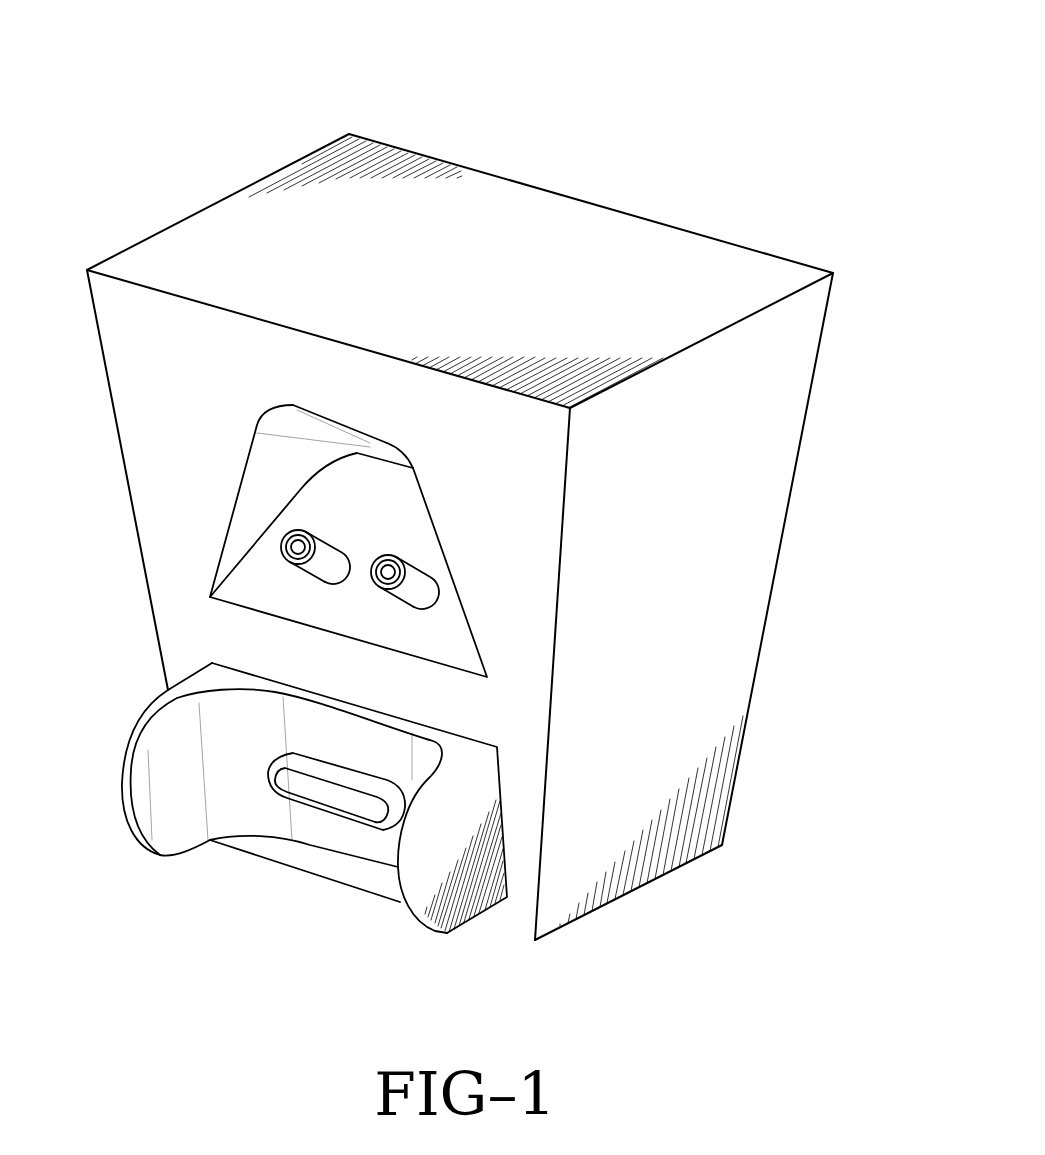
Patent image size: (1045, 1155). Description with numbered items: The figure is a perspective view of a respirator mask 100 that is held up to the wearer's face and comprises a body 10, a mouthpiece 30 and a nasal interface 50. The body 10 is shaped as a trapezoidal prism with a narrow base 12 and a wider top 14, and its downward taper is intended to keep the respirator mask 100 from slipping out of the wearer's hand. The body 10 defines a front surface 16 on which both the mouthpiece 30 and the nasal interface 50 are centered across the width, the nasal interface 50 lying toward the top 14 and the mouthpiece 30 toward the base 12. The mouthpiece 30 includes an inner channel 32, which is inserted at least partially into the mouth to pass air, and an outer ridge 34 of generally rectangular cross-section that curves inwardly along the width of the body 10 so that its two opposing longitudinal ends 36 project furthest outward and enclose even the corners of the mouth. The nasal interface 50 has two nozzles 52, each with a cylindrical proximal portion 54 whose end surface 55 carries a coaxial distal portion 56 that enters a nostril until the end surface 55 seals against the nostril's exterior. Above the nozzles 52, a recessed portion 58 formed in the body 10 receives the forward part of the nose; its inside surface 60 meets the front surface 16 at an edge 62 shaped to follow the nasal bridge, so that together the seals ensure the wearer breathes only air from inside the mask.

The respirator mask 100 is at (160, 120).
The body 10 is at (158, 537).
The base 12 is at (742, 838).
The top 14 is at (840, 297).
The front surface 16 is at (120, 347).
The mouthpiece 30 is at (507, 913).
The inner channel 32 is at (337, 815).
The outer ridge 34 is at (443, 730).
The longitudinal ends 36 is at (122, 747).
The nasal interface 50 is at (433, 475).
The nozzle 52 is at (340, 587).
The proximal portion 54 is at (307, 573).
The end surface 55 is at (322, 547).
The distal portion 56 is at (290, 540).
The recessed portion 58 is at (237, 418).
The inside surface 60 is at (373, 443).
The edge 62 is at (403, 450).